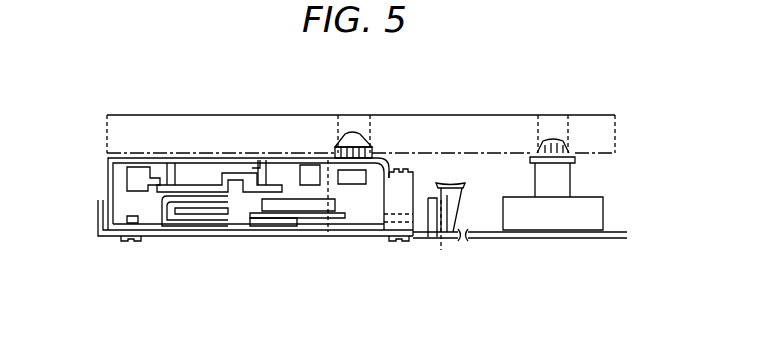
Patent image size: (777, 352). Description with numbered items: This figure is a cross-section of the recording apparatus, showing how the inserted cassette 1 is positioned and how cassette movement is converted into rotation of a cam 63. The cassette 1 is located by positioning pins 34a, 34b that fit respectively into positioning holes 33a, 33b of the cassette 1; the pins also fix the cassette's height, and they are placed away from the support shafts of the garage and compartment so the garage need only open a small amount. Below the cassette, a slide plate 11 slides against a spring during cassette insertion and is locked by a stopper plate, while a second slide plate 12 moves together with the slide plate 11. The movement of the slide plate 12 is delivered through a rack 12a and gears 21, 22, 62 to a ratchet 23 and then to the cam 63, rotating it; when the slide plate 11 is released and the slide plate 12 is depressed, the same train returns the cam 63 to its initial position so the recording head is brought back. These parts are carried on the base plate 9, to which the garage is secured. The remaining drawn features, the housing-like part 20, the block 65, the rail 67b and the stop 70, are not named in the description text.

The cassette 1 is at (295, 127).
The base plate 9 is at (362, 237).
The slide plate 11 is at (210, 218).
The slide plate 12 is at (192, 208).
The rack 12a is at (229, 200).
The housing 20 is at (110, 172).
The gear 21 is at (144, 172).
The gear 22 is at (228, 165).
The ratchet 23 is at (293, 218).
The positioning hole 33a is at (351, 135).
The positioning hole 33b is at (546, 140).
The positioning pin 34a is at (370, 140).
The positioning pin 34b is at (568, 143).
The gear 62 is at (310, 182).
The cam 63 is at (283, 207).
The end block 65 is at (337, 160).
The guide rail 67b is at (450, 239).
The stop member 70 is at (428, 218).